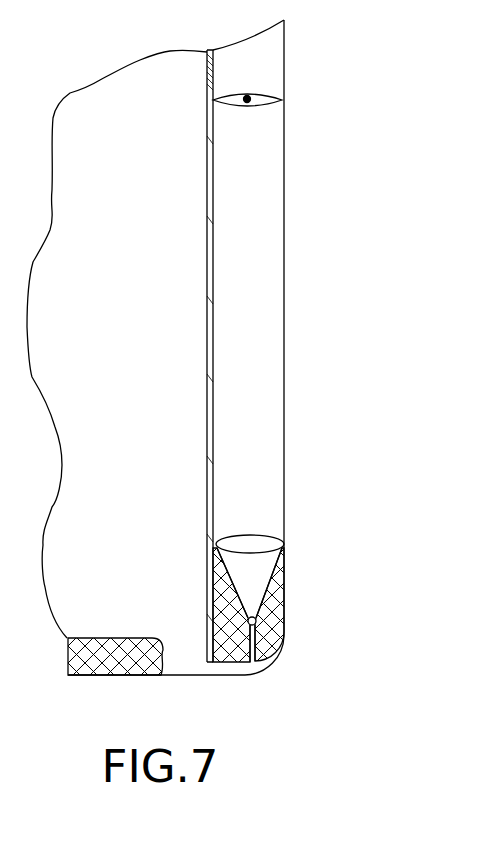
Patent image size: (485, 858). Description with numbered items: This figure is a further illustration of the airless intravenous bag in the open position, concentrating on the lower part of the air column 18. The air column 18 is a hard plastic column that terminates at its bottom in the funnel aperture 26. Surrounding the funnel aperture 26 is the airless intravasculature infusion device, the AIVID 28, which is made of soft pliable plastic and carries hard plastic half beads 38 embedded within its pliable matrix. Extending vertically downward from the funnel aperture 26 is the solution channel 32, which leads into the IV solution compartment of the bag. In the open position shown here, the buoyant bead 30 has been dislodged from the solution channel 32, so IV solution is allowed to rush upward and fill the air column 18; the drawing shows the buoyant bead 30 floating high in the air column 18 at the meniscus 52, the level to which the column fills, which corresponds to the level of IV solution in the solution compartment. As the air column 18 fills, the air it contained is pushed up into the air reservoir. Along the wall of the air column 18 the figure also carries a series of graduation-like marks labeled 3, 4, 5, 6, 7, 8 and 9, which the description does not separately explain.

The air column 18 is at (258, 311).
The funnel aperture 26 is at (258, 562).
The airless intravasculature infusion device (AIVID) 28 is at (273, 597).
The buoyant bead 30 is at (251, 96).
The solution channel 32 is at (203, 667).
The hard plastic half beads 38 is at (257, 638).
The meniscus 52 is at (277, 100).
The level mark 3 is at (207, 140).
The level mark 4 is at (207, 220).
The level mark 5 is at (207, 300).
The level mark 6 is at (207, 378).
The level mark 7 is at (207, 459).
The level mark 8 is at (213, 538).
The level mark 9 is at (213, 618).